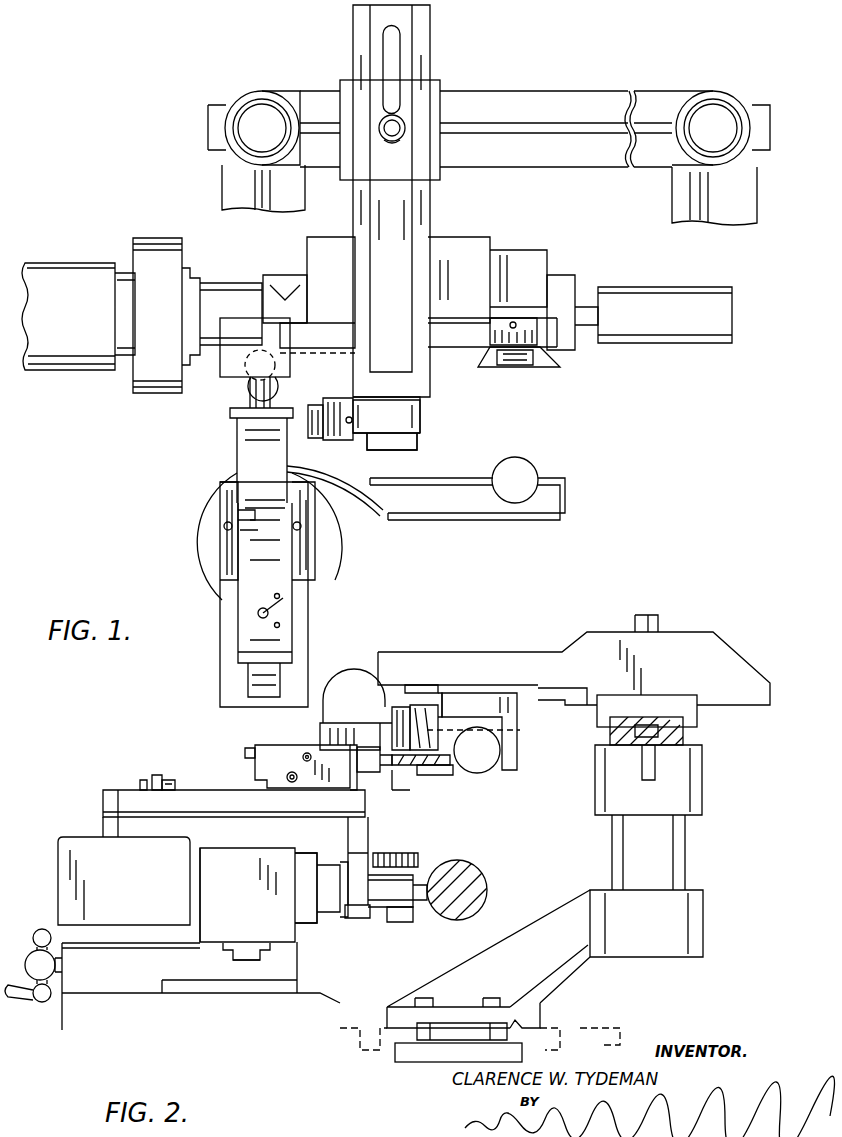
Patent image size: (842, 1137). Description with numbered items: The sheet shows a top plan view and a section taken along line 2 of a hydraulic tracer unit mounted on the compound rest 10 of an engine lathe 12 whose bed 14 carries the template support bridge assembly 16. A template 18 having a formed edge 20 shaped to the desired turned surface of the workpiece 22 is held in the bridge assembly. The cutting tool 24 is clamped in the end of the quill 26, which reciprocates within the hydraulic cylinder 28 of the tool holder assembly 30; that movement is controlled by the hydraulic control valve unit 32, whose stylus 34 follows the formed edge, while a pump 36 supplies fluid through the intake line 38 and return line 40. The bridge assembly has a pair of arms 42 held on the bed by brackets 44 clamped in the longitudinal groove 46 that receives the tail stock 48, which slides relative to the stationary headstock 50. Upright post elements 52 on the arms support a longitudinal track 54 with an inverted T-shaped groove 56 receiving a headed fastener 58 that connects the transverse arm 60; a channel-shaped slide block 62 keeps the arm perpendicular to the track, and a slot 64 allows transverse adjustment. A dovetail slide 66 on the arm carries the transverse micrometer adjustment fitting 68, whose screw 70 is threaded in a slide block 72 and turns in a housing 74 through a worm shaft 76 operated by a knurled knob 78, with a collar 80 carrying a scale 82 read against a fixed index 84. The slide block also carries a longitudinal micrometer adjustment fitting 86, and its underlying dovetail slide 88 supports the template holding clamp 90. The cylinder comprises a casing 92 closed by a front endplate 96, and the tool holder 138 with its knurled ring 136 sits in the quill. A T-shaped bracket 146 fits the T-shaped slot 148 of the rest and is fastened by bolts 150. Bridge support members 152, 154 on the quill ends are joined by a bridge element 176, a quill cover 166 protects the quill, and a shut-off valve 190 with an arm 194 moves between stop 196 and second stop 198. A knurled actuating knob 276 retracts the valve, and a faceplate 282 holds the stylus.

In FIG. 1, the section line 2— 2 is at (550, 40).
In FIG. 1, the compound rest 10 is at (190, 555).
In FIG. 2, the compound rest 10 is at (215, 975).
In FIG. 1, the engine lathe 12 is at (67, 262).
In FIG. 2, the bed 14 is at (565, 1033).
In FIG. 1, the template support bridge assembly 16 is at (340, 52).
In FIG. 2, the template support bridge assembly 16 is at (603, 622).
In FIG. 1, the template 18 is at (225, 378).
In FIG. 2, the template 18 is at (415, 768).
In FIG. 1, the edge 20 is at (312, 370).
In FIG. 1, the workpiece 22 is at (243, 295).
In FIG. 2, the workpiece 22 is at (485, 878).
In FIG. 1, the cutting tool 24 is at (256, 350).
In FIG. 2, the cutting tool 24 is at (423, 905).
In FIG. 1, the quill 26 is at (248, 398).
In FIG. 2, the quill 26 is at (395, 885).
In FIG. 1, the hydraulic cylinder 28 is at (305, 555).
In FIG. 2, the hydraulic cylinder 28 is at (257, 860).
In FIG. 1, the tool holder assembly 30 is at (213, 656).
In FIG. 2, the tool holder assembly 30 is at (92, 812).
In FIG. 1, the hydraulic control valve unit 32 is at (237, 455).
In FIG. 2, the hydraulic control valve unit 32 is at (278, 752).
In FIG. 1, the stylus 34 is at (280, 376).
In FIG. 2, the stylus 34 is at (372, 775).
In FIG. 1, the pump 36 is at (535, 470).
In FIG. 1, the intake line 38 is at (470, 478).
In FIG. 2, the intake line 38 is at (312, 757).
In FIG. 1, the return line 40 is at (470, 520).
In FIG. 2, the return line 40 is at (290, 781).
In FIG. 1, the arms 42 is at (232, 188).
In FIG. 2, the arms 42 is at (558, 970).
In FIG. 2, the brackets 44 is at (400, 1062).
In FIG. 2, the longitudinal groove 46 is at (447, 1030).
In FIG. 1, the tail stock 48 is at (708, 333).
In FIG. 1, the headstock 50 is at (60, 364).
In FIG. 1, the upright post elements 52 is at (242, 105).
In FIG. 2, the upright post elements 52 is at (670, 850).
In FIG. 1, the longitudinal track 54 is at (593, 105).
In FIG. 2, the longitudinal track 54 is at (685, 733).
In FIG. 1, the inverted T-shaped groove 56 is at (508, 130).
In FIG. 2, the inverted T-shaped groove 56 is at (646, 745).
In FIG. 1, the headed fastener 58 is at (405, 125).
In FIG. 2, the headed fastener 58 is at (660, 617).
In FIG. 1, the transverse arm 60 is at (420, 214).
In FIG. 2, the transverse arm 60 is at (548, 648).
In FIG. 1, the slide block 62 is at (432, 95).
In FIG. 2, the slide block 62 is at (672, 700).
In FIG. 1, the slot 64 is at (400, 50).
In FIG. 2, the dovetail slide 66 is at (556, 695).
In FIG. 1, the transverse micrometer adjustment fitting 68 is at (420, 420).
In FIG. 2, the transverse micrometer adjustment fitting 68 is at (355, 685).
In FIG. 1, the screw 70 is at (492, 332).
In FIG. 2, the screw 70 is at (405, 705).
In FIG. 1, the slide block 72 is at (470, 245).
In FIG. 2, the slide block 72 is at (438, 700).
In FIG. 1, the housing 74 is at (515, 265).
In FIG. 1, the worm shaft 76 is at (365, 412).
In FIG. 2, the worm shaft 76 is at (393, 722).
In FIG. 1, the knurled knob 78 is at (510, 368).
In FIG. 2, the knurled knob 78 is at (400, 800).
In FIG. 1, the collar 80 is at (490, 352).
In FIG. 2, the collar 80 is at (413, 700).
In FIG. 1, the scale 82 is at (540, 345).
In FIG. 1, the fixed index 84 is at (510, 323).
In FIG. 1, the longitudinal micrometer adjustment fitting 86 is at (552, 265).
In FIG. 2, the longitudinal micrometer adjustment fitting 86 is at (485, 720).
In FIG. 2, the dovetail slide 88 is at (495, 750).
In FIG. 1, the template holding clamp 90 is at (290, 338).
In FIG. 2, the template holding clamp 90 is at (447, 777).
In FIG. 2, the casing 92 is at (258, 895).
In FIG. 2, the front endplate 96 is at (325, 925).
In FIG. 2, the knurled ring 136 is at (410, 855).
In FIG. 2, the tool holder 138 is at (395, 925).
In FIG. 2, the T-shaped bracket 146 is at (250, 962).
In FIG. 2, the T-shaped slot 148 is at (225, 955).
In FIG. 1, the bolts 150 is at (224, 527).
In FIG. 1, the rear bridge support member 152 is at (305, 650).
In FIG. 2, the rear bridge support member 152 is at (103, 795).
In FIG. 2, the front bridge support member 154 is at (365, 832).
In FIG. 1, the quill cover 166 is at (228, 672).
In FIG. 2, the quill cover 166 is at (124, 881).
In FIG. 1, the bridge element 176 is at (235, 598).
In FIG. 2, the bridge element 176 is at (222, 800).
In FIG. 1, the shut-off valve 190 is at (258, 613).
In FIG. 2, the shut-off valve 190 is at (157, 775).
In FIG. 1, the arm 194 is at (285, 607).
In FIG. 2, the arm 194 is at (165, 783).
In FIG. 1, the stop 196 is at (277, 594).
In FIG. 1, the second stop 198 is at (276, 627).
In FIG. 2, the second stop 198 is at (140, 782).
In FIG. 1, the knurled actuating knob 276 is at (240, 530).
In FIG. 2, the knurled actuating knob 276 is at (243, 752).
In FIG. 1, the faceplate 282 is at (248, 416).
In FIG. 2, the faceplate 282 is at (357, 768).